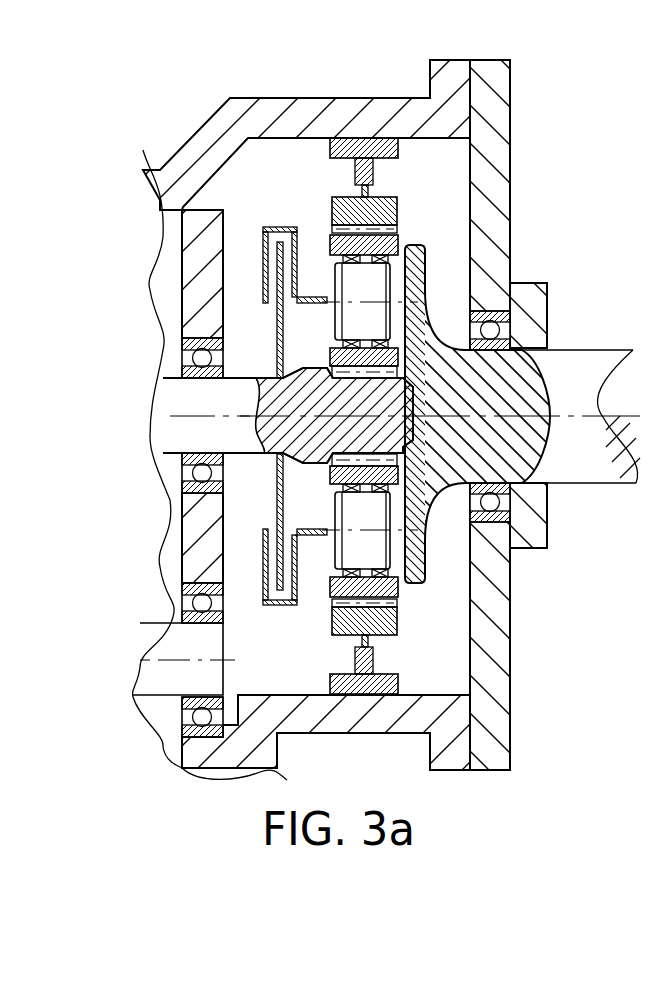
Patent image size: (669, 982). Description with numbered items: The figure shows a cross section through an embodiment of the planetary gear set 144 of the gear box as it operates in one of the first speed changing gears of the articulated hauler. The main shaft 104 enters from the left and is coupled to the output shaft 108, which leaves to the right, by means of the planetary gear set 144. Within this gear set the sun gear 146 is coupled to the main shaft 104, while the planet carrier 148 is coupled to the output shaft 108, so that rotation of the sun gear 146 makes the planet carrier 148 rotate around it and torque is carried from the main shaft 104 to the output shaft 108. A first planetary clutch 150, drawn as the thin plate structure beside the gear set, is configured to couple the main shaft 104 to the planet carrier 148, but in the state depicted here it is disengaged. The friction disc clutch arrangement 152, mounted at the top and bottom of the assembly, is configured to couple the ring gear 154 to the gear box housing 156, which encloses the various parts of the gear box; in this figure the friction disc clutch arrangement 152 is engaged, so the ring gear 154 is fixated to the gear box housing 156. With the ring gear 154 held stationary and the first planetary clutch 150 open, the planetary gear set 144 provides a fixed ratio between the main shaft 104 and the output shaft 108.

The main shaft 104 is at (195, 432).
The output shaft 108 is at (572, 385).
The planetary gear set 144 is at (380, 260).
The sun gear 146 is at (398, 612).
The planet carrier 148 is at (378, 292).
The first planetary clutch 150 is at (277, 228).
The friction disc clutch arrangement 152 is at (343, 157).
The ring gear 154 is at (397, 203).
The gear box housing 156 is at (195, 148).